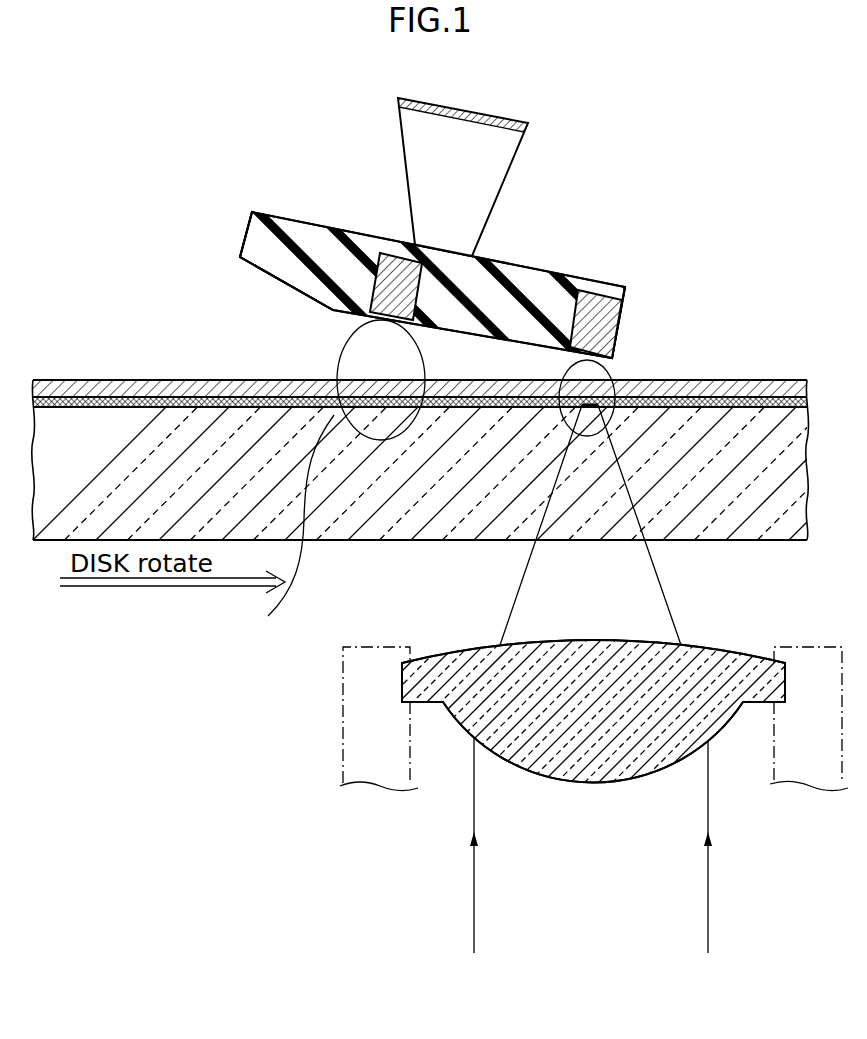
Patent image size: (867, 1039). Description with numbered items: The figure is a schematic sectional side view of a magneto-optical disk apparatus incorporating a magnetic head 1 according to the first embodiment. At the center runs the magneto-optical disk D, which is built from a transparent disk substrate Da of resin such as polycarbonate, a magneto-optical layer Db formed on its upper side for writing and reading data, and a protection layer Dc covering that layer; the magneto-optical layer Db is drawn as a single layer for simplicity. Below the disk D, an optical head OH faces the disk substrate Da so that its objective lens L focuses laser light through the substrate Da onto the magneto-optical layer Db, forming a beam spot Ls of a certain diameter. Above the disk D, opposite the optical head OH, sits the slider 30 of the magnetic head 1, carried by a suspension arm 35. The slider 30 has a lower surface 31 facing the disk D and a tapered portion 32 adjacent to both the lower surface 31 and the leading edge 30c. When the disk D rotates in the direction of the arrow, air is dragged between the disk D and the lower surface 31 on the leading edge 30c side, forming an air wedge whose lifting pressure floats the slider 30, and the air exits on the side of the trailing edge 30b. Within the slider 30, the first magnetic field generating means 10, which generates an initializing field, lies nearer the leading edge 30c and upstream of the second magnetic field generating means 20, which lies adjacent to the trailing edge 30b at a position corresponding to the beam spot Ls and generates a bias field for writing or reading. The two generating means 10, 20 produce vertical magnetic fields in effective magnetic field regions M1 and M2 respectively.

The magnetic head 1 is at (630, 203).
The first magnetic field generating means 10 is at (369, 311).
The second magnetic field generating means 20 is at (626, 310).
The slider 30 is at (445, 252).
The trailing edge 30b is at (619, 338).
The leading edge 30c is at (250, 220).
The lower surface 31 is at (366, 349).
The tapered portion 32 is at (270, 276).
The suspension arm 35 is at (517, 152).
The magneto-optical disk D is at (449, 458).
The disk substrate Da is at (357, 530).
The magneto-optical layer Db is at (77, 396).
The protection layer Dc is at (170, 387).
The objective lens L is at (724, 649).
The beam spot Ls is at (592, 407).
The effective magnetic field region M1 is at (294, 524).
The effective magnetic field region M2 is at (598, 407).
The optical head OH is at (340, 715).